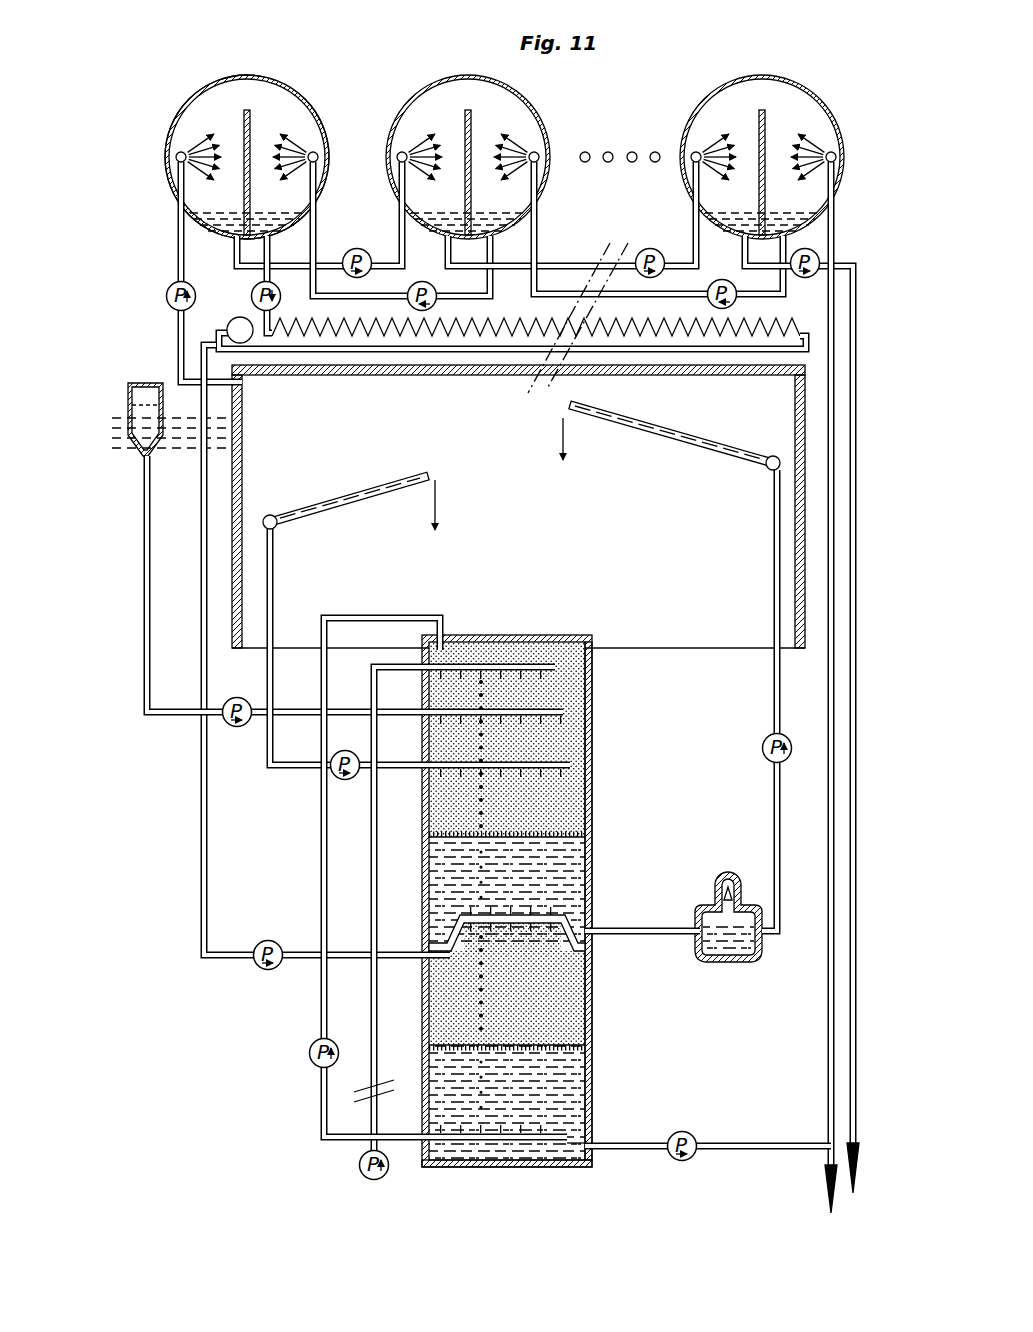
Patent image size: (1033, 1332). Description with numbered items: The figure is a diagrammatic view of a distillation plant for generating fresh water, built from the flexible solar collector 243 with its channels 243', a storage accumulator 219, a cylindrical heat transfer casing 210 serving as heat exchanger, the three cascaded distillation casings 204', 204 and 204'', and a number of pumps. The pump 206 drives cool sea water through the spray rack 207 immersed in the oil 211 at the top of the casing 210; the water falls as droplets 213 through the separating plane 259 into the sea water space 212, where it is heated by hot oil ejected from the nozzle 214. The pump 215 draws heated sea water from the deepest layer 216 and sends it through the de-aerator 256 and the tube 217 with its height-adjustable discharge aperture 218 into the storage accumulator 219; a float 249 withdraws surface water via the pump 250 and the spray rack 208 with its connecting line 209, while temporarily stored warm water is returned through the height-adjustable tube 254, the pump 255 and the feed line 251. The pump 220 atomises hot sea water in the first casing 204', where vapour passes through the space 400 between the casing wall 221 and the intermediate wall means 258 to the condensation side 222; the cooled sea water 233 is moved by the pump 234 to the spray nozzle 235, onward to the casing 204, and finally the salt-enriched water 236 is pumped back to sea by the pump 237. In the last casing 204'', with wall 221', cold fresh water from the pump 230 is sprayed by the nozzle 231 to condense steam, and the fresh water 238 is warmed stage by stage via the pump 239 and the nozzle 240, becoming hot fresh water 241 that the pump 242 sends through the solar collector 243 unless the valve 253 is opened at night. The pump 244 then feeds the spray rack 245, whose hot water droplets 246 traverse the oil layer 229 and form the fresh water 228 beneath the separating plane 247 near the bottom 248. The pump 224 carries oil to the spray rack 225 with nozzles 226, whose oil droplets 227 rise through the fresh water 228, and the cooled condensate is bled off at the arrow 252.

The space 400 is at (243, 100).
The distillation casing 204 is at (523, 157).
The distillation casing 204' is at (253, 106).
The distillation casing 204'' is at (695, 106).
The chamber wall 221 is at (232, 149).
The chamber wall 221' is at (762, 130).
The condensation side 222 is at (300, 100).
The intermediate wall means 258 is at (243, 113).
The spray nozzle 240 is at (315, 152).
The hot fresh water 241 is at (285, 218).
The spray nozzle 235 is at (404, 150).
The water 236 is at (715, 216).
The spray nozzle 231 is at (828, 118).
The fresh water 238 is at (800, 215).
The sea water 233 is at (225, 235).
The pump 234 is at (358, 250).
The pump 237 is at (815, 258).
The pump 242 is at (255, 292).
The pump 220 is at (170, 305).
The pump 239 is at (430, 345).
The flexible solar collector 243 is at (536, 363).
The channels 243' is at (512, 325).
The valve 253 is at (248, 343).
The storage accumulator 219 is at (244, 450).
The float 249 is at (150, 447).
The discharge aperture 218 is at (567, 407).
The tube 217 is at (660, 445).
The tube 254 is at (355, 502).
The spray rack 207 is at (478, 650).
The heat transfer casing 210 is at (530, 638).
The oil 211 is at (588, 648).
The spray rack 208 is at (560, 703).
The distributor 209 is at (575, 722).
The droplets 213 is at (575, 742).
The pump 215 is at (763, 748).
The pump 250 is at (237, 730).
The supply line 251 is at (440, 780).
The pump 255 is at (320, 790).
The separating plane 259 is at (580, 832).
The sea water space 212 is at (565, 878).
The nozzle 214 is at (560, 908).
The deepest layer 216 is at (585, 930).
The spray rack 245 is at (515, 933).
The pump 244 is at (262, 972).
The hot water droplets 246 is at (478, 985).
The oil layer 229 is at (565, 1005).
The de-aerator 256 is at (735, 965).
The separating plane 247 is at (455, 1045).
The pump 224 is at (306, 1053).
The fresh water 228 is at (565, 1070).
The oil droplets 227 is at (565, 1095).
The nozzles 226 is at (585, 1128).
The pump 230 is at (690, 1135).
The pump 206 is at (358, 1165).
The spray rack 225 is at (470, 1150).
The bottom 248 is at (528, 1170).
The arrow 252 is at (825, 1182).